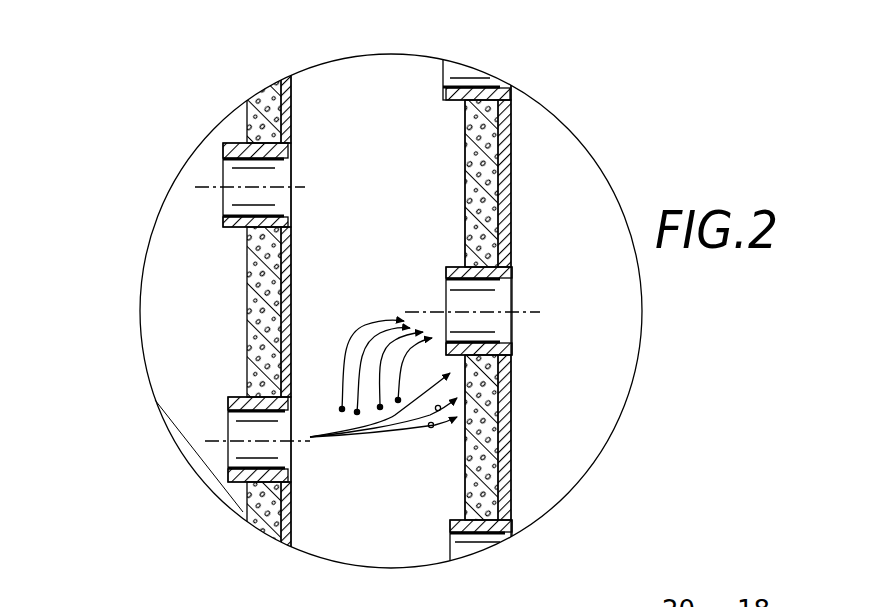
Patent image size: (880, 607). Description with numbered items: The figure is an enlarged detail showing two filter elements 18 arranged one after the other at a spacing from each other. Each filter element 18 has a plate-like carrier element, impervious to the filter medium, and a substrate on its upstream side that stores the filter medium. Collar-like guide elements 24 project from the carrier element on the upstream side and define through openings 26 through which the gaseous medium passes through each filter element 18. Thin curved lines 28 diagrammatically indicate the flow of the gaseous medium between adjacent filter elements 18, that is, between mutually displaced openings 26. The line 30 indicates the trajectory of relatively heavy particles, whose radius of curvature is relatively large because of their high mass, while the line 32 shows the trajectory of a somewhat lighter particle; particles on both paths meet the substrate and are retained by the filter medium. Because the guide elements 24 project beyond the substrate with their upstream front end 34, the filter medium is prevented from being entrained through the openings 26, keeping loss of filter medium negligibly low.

The filter element 18 is at (398, 303).
The guide element 24 is at (460, 82).
The through opening 26 is at (237, 177).
The thin curved lines 28 is at (398, 400).
The line 30 is at (434, 426).
The line 32 is at (441, 408).
The upstream front end 34 is at (442, 91).